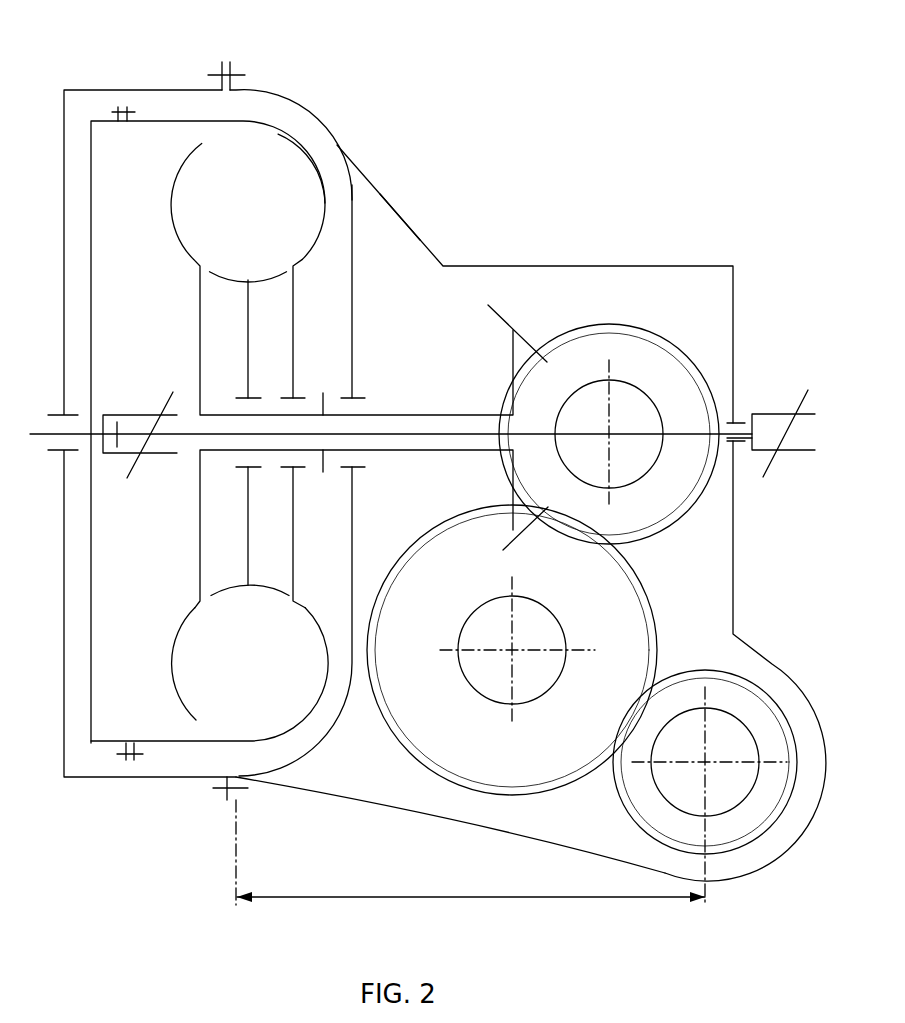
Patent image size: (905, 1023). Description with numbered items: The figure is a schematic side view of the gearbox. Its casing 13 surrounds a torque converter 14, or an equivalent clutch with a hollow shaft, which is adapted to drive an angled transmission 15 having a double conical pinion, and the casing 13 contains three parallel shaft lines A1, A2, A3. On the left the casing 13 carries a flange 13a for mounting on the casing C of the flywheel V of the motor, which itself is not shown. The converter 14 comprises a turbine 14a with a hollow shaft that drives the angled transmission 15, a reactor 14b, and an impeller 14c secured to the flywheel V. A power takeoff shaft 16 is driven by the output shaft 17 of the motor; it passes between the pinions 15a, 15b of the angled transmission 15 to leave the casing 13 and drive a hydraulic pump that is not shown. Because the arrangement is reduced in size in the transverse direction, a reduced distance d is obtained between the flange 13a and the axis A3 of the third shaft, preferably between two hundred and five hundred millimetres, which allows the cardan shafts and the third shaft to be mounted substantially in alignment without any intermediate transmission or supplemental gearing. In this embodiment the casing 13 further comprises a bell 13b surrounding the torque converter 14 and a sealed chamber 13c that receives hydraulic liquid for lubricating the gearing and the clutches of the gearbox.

The casing of the flywheel C is at (63, 162).
The flywheel V is at (90, 133).
The casing 13 is at (742, 535).
The flange 13a is at (230, 66).
The bell 13b is at (352, 192).
The sealed chamber 13c is at (402, 216).
The torque converter 14 is at (316, 138).
The turbine 14a is at (172, 195).
The reactor 14b is at (248, 278).
The impeller 14c is at (280, 128).
The angled transmission 15 is at (550, 328).
The pinion 15a is at (600, 352).
The pinion 15b is at (609, 333).
The power takeoff shaft 16 is at (747, 413).
The output shaft 17 is at (46, 433).
The shaft line A1 is at (609, 434).
The shaft line A2 is at (512, 650).
The shaft line A3 is at (705, 762).
The distance d is at (462, 898).